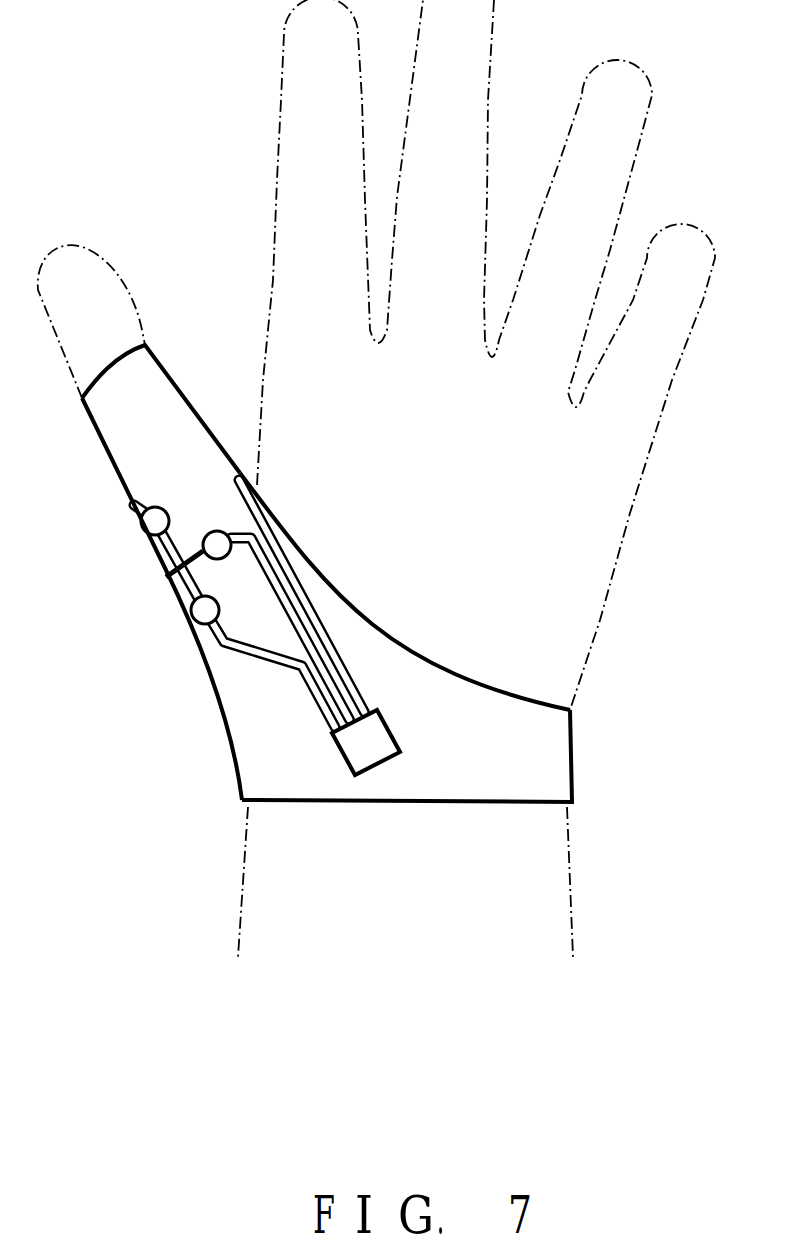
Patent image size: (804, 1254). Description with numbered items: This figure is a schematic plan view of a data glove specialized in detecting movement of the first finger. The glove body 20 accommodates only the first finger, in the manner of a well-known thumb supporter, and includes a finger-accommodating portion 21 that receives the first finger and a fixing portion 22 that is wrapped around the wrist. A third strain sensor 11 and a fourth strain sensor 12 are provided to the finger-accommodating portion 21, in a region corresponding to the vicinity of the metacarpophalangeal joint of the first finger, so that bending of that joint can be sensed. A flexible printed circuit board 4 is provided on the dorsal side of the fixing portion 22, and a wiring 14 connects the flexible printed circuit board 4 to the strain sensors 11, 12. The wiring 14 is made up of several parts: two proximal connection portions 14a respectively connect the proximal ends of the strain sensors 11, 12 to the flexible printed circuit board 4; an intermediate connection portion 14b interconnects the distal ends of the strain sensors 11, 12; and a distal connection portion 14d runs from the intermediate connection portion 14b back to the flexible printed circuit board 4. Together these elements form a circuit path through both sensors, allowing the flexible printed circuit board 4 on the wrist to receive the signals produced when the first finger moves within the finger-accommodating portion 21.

The flexible printed circuit board 4 is at (398, 728).
The third strain sensor 11 is at (167, 547).
The fourth strain sensor 12 is at (167, 583).
The wiring 14 is at (338, 652).
The proximal connection portions 14a is at (278, 618).
The intermediate connection portion 14b is at (140, 513).
The distal connection portion 14d is at (283, 557).
The glove body 20 is at (333, 578).
The finger-accommodating portion 21 is at (171, 388).
The fixing portion 22 is at (428, 795).